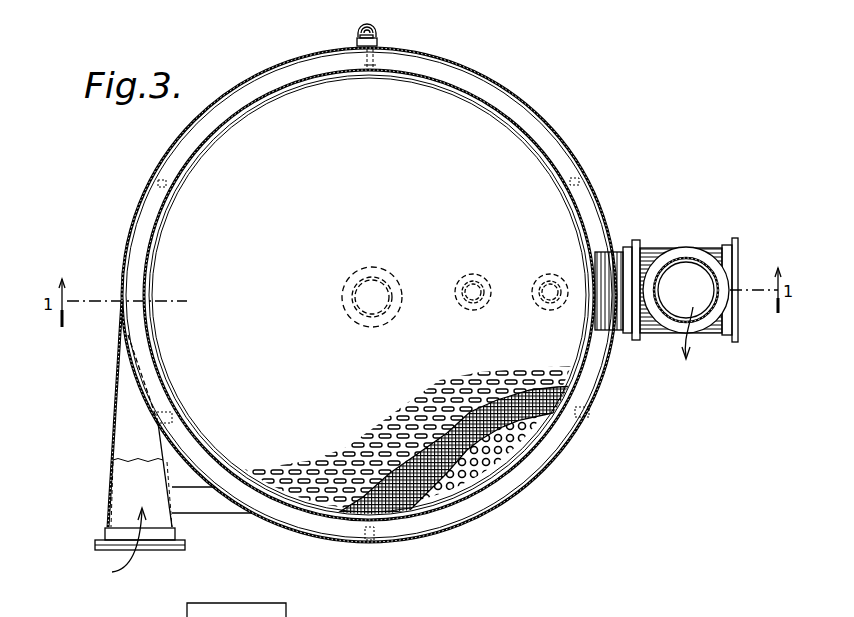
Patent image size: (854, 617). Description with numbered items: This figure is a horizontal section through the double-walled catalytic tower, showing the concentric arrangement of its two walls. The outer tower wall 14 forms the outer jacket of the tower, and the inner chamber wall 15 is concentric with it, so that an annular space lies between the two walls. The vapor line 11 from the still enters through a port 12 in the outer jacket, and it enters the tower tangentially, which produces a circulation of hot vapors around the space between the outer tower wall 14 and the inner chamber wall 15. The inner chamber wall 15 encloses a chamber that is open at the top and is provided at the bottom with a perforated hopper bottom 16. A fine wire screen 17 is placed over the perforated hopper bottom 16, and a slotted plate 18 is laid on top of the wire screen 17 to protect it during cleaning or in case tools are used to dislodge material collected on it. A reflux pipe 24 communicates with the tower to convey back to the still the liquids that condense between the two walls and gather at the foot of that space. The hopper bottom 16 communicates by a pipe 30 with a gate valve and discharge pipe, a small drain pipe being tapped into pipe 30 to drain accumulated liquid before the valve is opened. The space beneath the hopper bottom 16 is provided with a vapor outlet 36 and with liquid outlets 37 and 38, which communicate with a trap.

The vapor line 11 is at (123, 488).
The port 12 is at (145, 368).
The outer tower wall 14 is at (546, 118).
The inner chamber wall 15 is at (456, 82).
The perforated hopper bottom 16 is at (521, 452).
The fine wire screen 17 is at (393, 498).
The slotted plate 18 is at (388, 437).
The reflux pipe 24 is at (357, 32).
The pipe 30 is at (380, 292).
The vapor outlet 36 is at (684, 278).
The liquid outlet 37 is at (476, 289).
The liquid outlet 38 is at (550, 285).